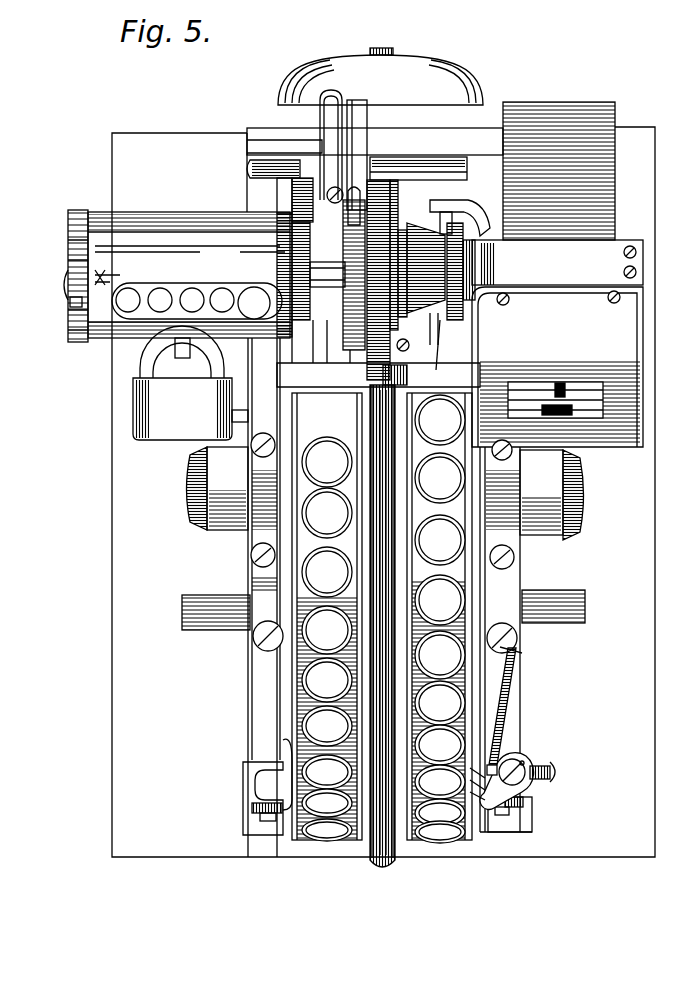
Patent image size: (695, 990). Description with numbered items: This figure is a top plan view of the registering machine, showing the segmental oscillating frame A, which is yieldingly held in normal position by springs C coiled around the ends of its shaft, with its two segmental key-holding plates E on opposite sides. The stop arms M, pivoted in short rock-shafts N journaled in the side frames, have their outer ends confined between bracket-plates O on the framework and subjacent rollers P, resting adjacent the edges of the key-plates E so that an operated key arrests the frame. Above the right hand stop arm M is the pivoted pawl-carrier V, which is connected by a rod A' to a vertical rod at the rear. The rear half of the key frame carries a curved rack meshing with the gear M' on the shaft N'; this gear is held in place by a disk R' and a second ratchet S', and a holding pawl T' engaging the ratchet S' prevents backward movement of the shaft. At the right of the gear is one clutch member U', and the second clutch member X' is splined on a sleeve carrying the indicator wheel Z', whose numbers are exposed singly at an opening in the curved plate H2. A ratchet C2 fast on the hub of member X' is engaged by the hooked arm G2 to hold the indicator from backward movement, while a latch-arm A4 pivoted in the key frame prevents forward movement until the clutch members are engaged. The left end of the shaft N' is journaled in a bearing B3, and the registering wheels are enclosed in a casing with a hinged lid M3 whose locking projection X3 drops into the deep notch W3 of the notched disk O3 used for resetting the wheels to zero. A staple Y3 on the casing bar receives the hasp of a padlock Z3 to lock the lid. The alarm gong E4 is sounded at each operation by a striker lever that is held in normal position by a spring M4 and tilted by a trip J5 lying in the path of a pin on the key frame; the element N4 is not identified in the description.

The alarm gong E4 is at (380, 76).
The spring M4 is at (330, 146).
The hammer bracket N4 is at (358, 160).
The second ratchet S' is at (418, 176).
The arm G2 is at (478, 212).
The indicator wheel Z' is at (571, 166).
The notched disk O3 is at (70, 230).
The locking projection X3 is at (85, 297).
The hinged lid M3 is at (189, 275).
The bearing B3 is at (292, 277).
The locking notch W3 is at (70, 302).
The trip J5 is at (350, 208).
The shaft N' is at (318, 271).
The second clutch member X' is at (484, 270).
The ratchet C2 is at (503, 256).
The disk R' is at (347, 275).
The gear M' is at (365, 280).
The holding pawl T' is at (411, 290).
The clutch member U' is at (452, 284).
The curved plate H2 is at (557, 367).
The latch-arm A4 is at (442, 348).
The staple Y3 is at (182, 352).
The padlock Z3 is at (190, 409).
The springs C is at (385, 493).
The key-holding plates E is at (382, 618).
The rock-shafts N is at (383, 593).
The rod A' is at (522, 700).
The pawl-carrier V is at (524, 760).
The bracket-plates O is at (245, 782).
The stop arms M is at (274, 774).
The rollers P is at (524, 805).
The oscillating frame A is at (369, 636).